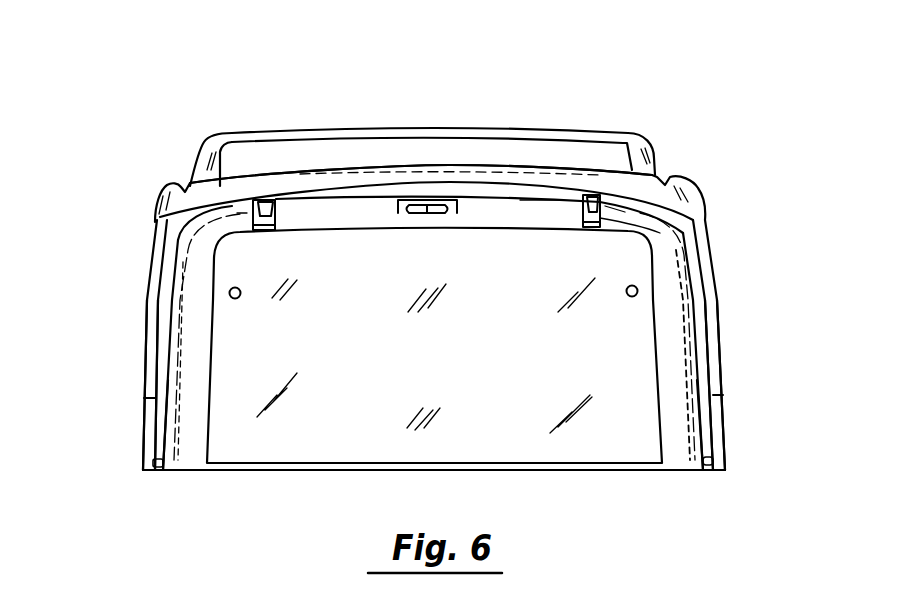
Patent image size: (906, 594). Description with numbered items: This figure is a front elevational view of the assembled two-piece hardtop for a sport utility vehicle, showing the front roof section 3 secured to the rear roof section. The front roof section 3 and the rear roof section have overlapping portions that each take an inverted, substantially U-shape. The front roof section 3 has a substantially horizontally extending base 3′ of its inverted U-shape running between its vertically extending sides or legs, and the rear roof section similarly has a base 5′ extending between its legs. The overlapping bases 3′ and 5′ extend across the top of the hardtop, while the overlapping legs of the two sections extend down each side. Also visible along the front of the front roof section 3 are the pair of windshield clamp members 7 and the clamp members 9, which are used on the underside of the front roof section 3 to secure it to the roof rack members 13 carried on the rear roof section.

The front roof section 3 is at (650, 182).
The base of the inverted U-shape of the front roof section 3′ is at (463, 180).
The base of the inverted U-shape of the rear roof section 5′ is at (500, 199).
The windshield clamp members 7 is at (277, 225).
The clamp members 9 is at (402, 213).
The roof rack members 13 is at (337, 132).